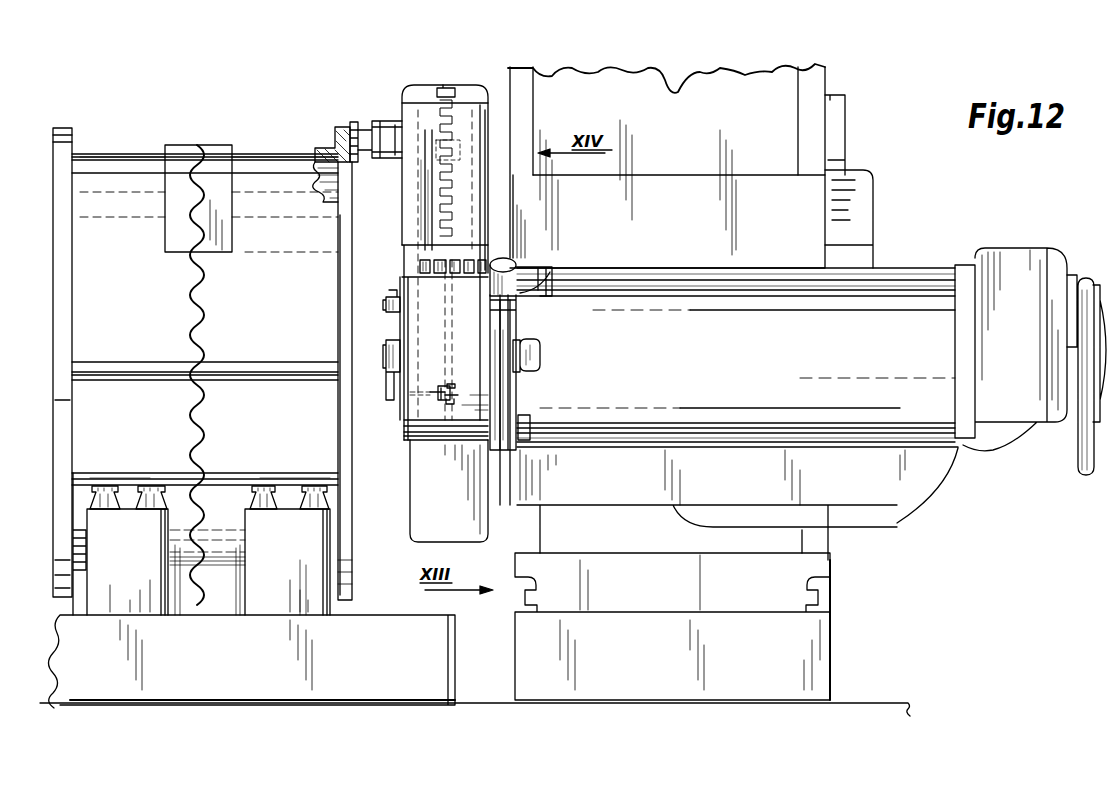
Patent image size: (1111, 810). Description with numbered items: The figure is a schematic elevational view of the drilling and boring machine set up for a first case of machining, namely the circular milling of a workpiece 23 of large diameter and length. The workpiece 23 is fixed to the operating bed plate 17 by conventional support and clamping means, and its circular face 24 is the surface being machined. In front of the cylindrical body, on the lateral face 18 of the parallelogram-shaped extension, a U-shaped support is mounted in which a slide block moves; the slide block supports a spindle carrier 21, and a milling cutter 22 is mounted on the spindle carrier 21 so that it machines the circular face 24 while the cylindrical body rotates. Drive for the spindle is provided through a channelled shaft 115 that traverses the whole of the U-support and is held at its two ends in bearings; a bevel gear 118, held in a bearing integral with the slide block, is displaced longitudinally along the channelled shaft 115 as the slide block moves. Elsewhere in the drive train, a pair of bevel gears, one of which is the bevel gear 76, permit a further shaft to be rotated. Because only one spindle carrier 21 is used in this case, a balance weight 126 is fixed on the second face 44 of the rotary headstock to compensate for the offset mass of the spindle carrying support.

The operating bed plate 17 is at (448, 320).
The lateral face 18 is at (408, 272).
The spindle carrier 21 is at (387, 163).
The milling cutter 22 is at (355, 122).
The workpiece 23 is at (253, 163).
The circular face 24 is at (343, 127).
The second face of the rotary headstock 44 is at (430, 440).
The bevel gear 76 is at (442, 388).
The channelled shaft 115 is at (470, 198).
The bevel gear 118 is at (480, 140).
The balance weight 126 is at (427, 517).